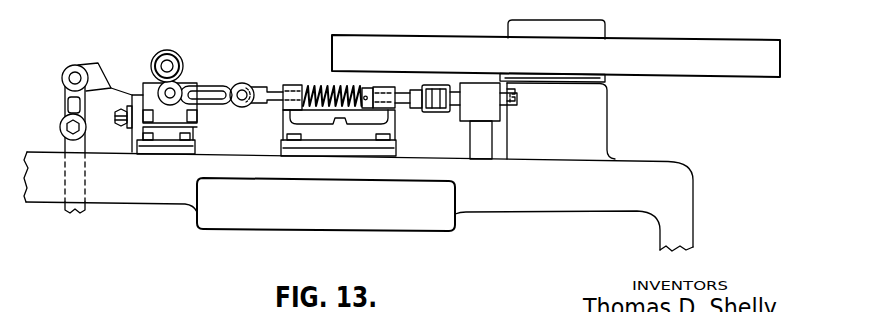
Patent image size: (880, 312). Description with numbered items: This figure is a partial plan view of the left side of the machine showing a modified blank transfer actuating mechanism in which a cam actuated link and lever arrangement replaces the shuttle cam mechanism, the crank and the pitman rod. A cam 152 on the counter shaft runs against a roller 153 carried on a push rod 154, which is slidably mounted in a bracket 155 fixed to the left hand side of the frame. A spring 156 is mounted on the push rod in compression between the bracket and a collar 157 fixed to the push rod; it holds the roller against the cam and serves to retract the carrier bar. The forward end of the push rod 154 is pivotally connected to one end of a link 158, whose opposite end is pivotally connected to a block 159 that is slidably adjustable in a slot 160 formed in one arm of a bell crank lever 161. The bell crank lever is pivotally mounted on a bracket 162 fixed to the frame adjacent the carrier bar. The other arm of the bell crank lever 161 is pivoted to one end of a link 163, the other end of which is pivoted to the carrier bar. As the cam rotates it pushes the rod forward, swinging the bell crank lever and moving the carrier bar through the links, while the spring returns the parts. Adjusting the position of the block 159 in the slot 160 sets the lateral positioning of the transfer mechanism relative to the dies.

The cam 152 is at (475, 95).
The roller 153 is at (438, 112).
The push rod 154 is at (353, 90).
The bracket 155 is at (295, 85).
The spring 156 is at (310, 88).
The collar 157 is at (365, 90).
The link 158 is at (217, 83).
The block 159 is at (180, 80).
The slot 160 is at (145, 88).
The bell crank lever 161 is at (110, 77).
The bracket 162 is at (167, 50).
The link 163 is at (65, 98).